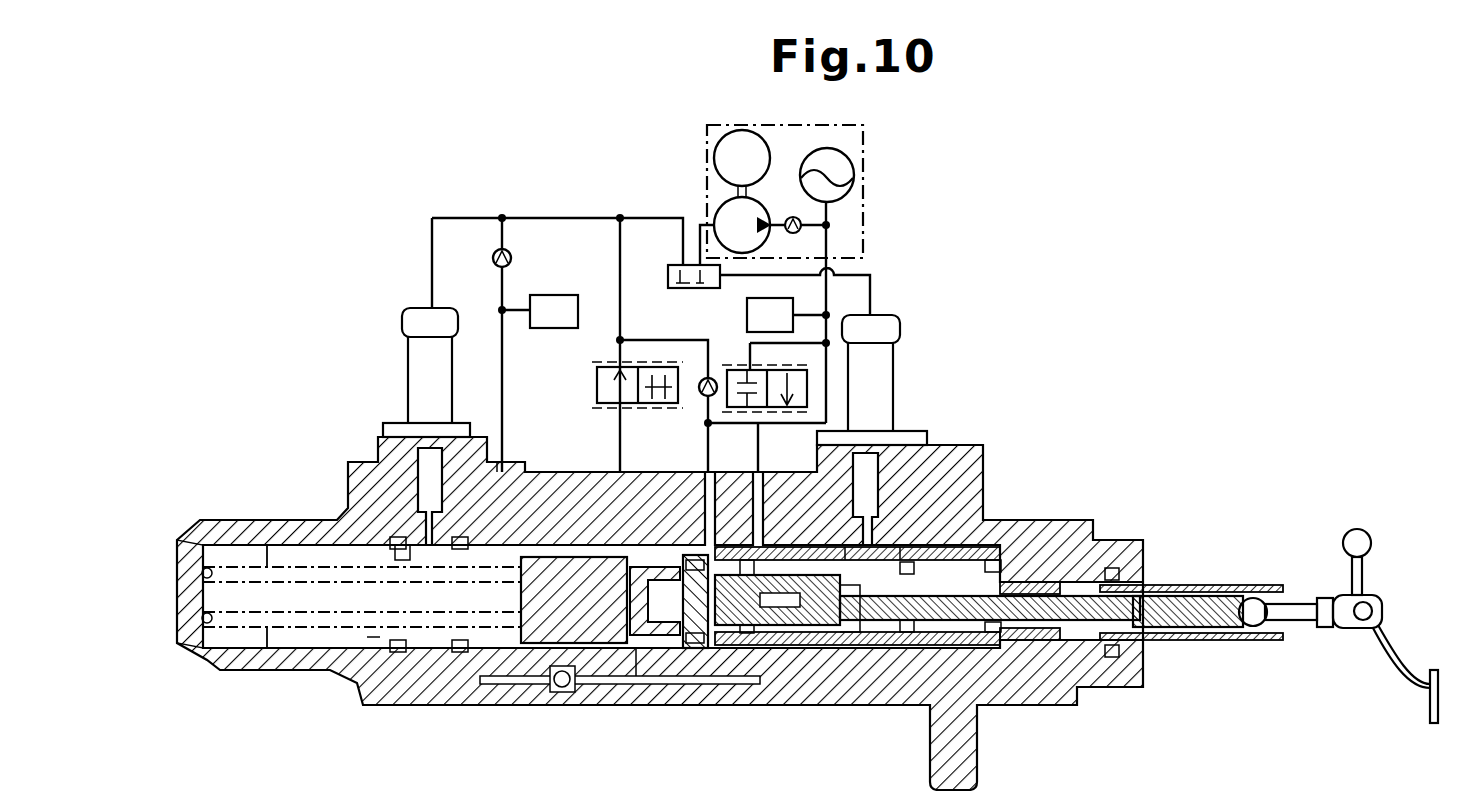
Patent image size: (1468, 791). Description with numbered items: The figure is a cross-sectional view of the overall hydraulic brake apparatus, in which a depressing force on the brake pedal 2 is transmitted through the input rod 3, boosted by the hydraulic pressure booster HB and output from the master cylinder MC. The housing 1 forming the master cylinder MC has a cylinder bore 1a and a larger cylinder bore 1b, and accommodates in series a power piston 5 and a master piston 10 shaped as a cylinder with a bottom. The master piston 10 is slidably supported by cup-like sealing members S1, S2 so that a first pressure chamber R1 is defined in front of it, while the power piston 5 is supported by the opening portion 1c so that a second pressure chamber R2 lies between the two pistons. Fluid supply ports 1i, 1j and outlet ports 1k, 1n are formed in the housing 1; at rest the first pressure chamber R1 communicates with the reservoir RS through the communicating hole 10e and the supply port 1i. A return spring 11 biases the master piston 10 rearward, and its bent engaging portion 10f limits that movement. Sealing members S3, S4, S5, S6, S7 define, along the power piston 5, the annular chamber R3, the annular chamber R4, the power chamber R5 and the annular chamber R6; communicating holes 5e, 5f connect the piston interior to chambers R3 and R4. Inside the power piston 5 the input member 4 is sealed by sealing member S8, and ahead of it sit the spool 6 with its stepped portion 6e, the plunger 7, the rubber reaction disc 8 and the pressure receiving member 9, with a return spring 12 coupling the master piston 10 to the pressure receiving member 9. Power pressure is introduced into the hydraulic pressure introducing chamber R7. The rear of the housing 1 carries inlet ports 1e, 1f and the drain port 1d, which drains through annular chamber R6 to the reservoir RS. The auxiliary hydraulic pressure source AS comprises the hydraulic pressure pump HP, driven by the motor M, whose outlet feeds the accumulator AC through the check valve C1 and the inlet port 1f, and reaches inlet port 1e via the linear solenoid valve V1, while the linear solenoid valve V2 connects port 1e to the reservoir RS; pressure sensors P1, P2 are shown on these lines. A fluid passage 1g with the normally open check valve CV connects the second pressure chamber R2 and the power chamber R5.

The master cylinder MC is at (232, 500).
The hydraulic pressure booster HB is at (1002, 496).
The housing 1 is at (202, 532).
The cylinder bore 1a is at (254, 668).
The cylinder bore 1b is at (640, 660).
The opening portion 1c is at (1148, 642).
The drain port 1d is at (950, 515).
The inlet port 1e is at (701, 472).
The inlet port 1f is at (764, 472).
The fluid passage 1g is at (585, 690).
The fluid supply port 1i is at (366, 470).
The fluid supply port 1j is at (514, 470).
The outlet port 1k is at (213, 668).
The outlet port 1n is at (478, 692).
The brake pedal 2 is at (1384, 660).
The input rod 3 is at (1293, 621).
The input member 4 is at (1218, 641).
The power piston 5 is at (815, 650).
The communicating hole 5e is at (855, 560).
The communicating hole 5f is at (900, 560).
The spool 6 is at (985, 655).
The stepped portion 6e is at (846, 640).
The plunger 7 is at (800, 640).
The reaction disc 8 is at (698, 650).
The pressure receiving member 9 is at (577, 590).
The master piston 10 is at (557, 597).
The communicating hole 10e is at (400, 576).
The engaging portion 10f is at (370, 647).
The return spring 11 is at (258, 520).
The return spring 12 is at (646, 580).
The auxiliary hydraulic pressure source AS is at (809, 190).
The accumulator AC is at (842, 152).
The hydraulic pressure pump HP is at (718, 206).
The electric motor M is at (742, 163).
The check valve C1 is at (792, 216).
The pressure differential responsive check valve CV is at (556, 690).
The reservoir RS is at (692, 290).
The pressure sensor P1 is at (770, 315).
The pressure sensor P2 is at (554, 311).
The linear solenoid valve V1 is at (757, 413).
The linear solenoid valve V2 is at (597, 380).
The first pressure chamber R1 is at (295, 603).
The second pressure chamber R2 is at (672, 640).
The annular chamber R3 is at (740, 660).
The annular chamber R4 is at (850, 630).
The power chamber R5 is at (978, 720).
The annular chamber R6 is at (1045, 582).
The hydraulic pressure introducing chamber R7 is at (890, 650).
The sealing member S1 is at (398, 653).
The sealing member S2 is at (460, 655).
The sealing member S3 is at (696, 665).
The sealing member S4 is at (760, 655).
The sealing member S5 is at (905, 660).
The sealing member S6 is at (1010, 650).
The sealing member S7 is at (1118, 660).
The sealing member S8 is at (1123, 580).